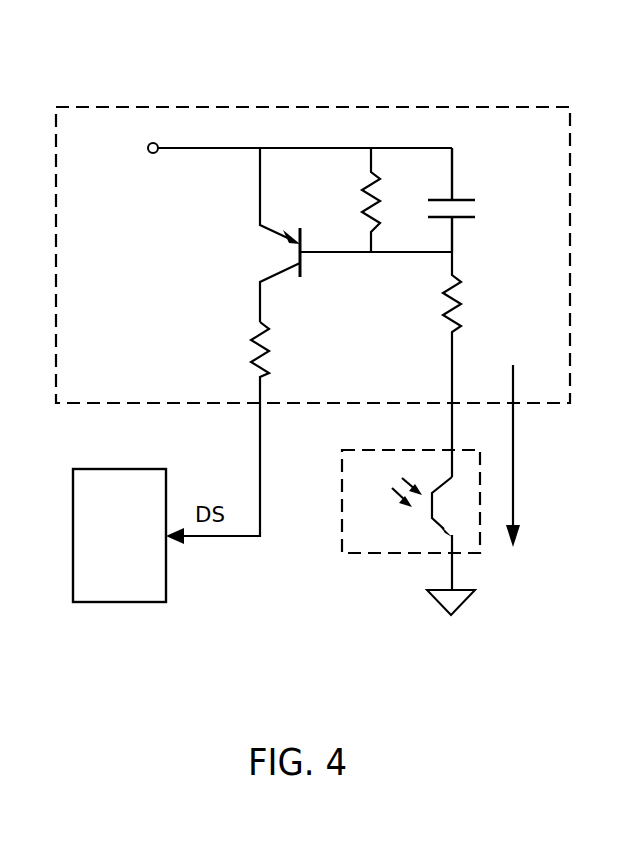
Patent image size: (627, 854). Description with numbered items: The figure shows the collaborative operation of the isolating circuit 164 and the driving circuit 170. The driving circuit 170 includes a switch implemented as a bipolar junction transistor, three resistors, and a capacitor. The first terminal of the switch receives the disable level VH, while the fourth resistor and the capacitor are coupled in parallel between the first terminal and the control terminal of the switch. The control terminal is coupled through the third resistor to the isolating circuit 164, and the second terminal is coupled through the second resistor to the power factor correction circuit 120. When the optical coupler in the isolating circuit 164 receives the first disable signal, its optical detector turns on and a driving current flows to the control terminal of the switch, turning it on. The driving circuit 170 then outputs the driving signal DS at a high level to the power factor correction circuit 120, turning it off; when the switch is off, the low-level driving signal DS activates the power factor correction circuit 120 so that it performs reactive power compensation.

The driving circuit 170 is at (268, 107).
The isolating circuit 164 is at (482, 508).
The power factor correction circuit 120 is at (140, 549).